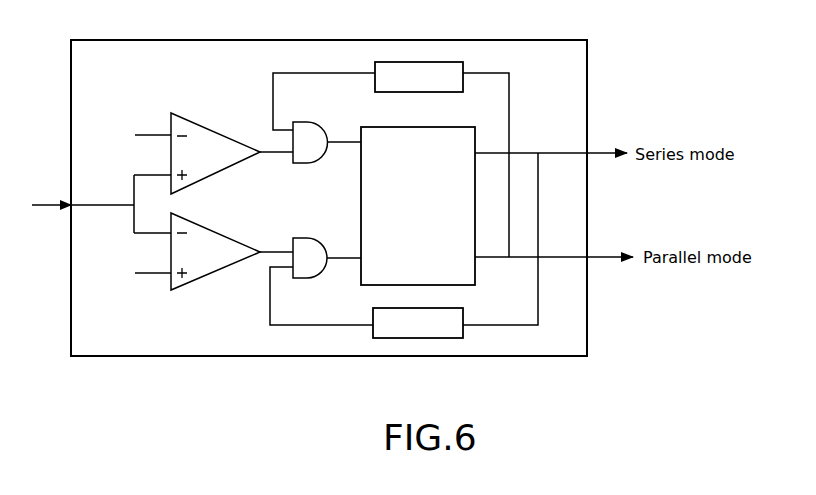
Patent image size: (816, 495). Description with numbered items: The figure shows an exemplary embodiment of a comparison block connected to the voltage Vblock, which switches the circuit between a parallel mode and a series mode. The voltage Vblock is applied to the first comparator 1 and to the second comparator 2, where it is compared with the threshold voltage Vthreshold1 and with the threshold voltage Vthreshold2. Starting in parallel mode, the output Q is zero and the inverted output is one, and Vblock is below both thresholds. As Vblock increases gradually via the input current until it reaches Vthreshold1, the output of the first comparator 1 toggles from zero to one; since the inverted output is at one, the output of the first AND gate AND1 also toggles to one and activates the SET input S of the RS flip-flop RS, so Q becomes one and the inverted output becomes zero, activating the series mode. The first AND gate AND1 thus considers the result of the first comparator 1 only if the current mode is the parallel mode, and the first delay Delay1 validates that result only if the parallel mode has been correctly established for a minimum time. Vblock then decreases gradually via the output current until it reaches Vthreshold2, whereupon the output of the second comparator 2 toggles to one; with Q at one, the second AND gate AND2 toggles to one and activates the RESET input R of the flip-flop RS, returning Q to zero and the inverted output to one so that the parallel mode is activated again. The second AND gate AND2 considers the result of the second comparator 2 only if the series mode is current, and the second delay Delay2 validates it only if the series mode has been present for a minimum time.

The comparator Comp1 1 is at (232, 153).
The comparator Comp2 2 is at (232, 251).
The AND gate &1 AND1 is at (324, 118).
The AND gate &2 AND2 is at (321, 281).
The RS flip-flop RS is at (418, 206).
The delay Delay1 is at (442, 159).
The delay Delay2 is at (455, 245).
The voltage Vblock is at (42, 193).
The threshold voltage Vthreshold1 is at (125, 133).
The threshold voltage Vthreshold2 is at (125, 271).